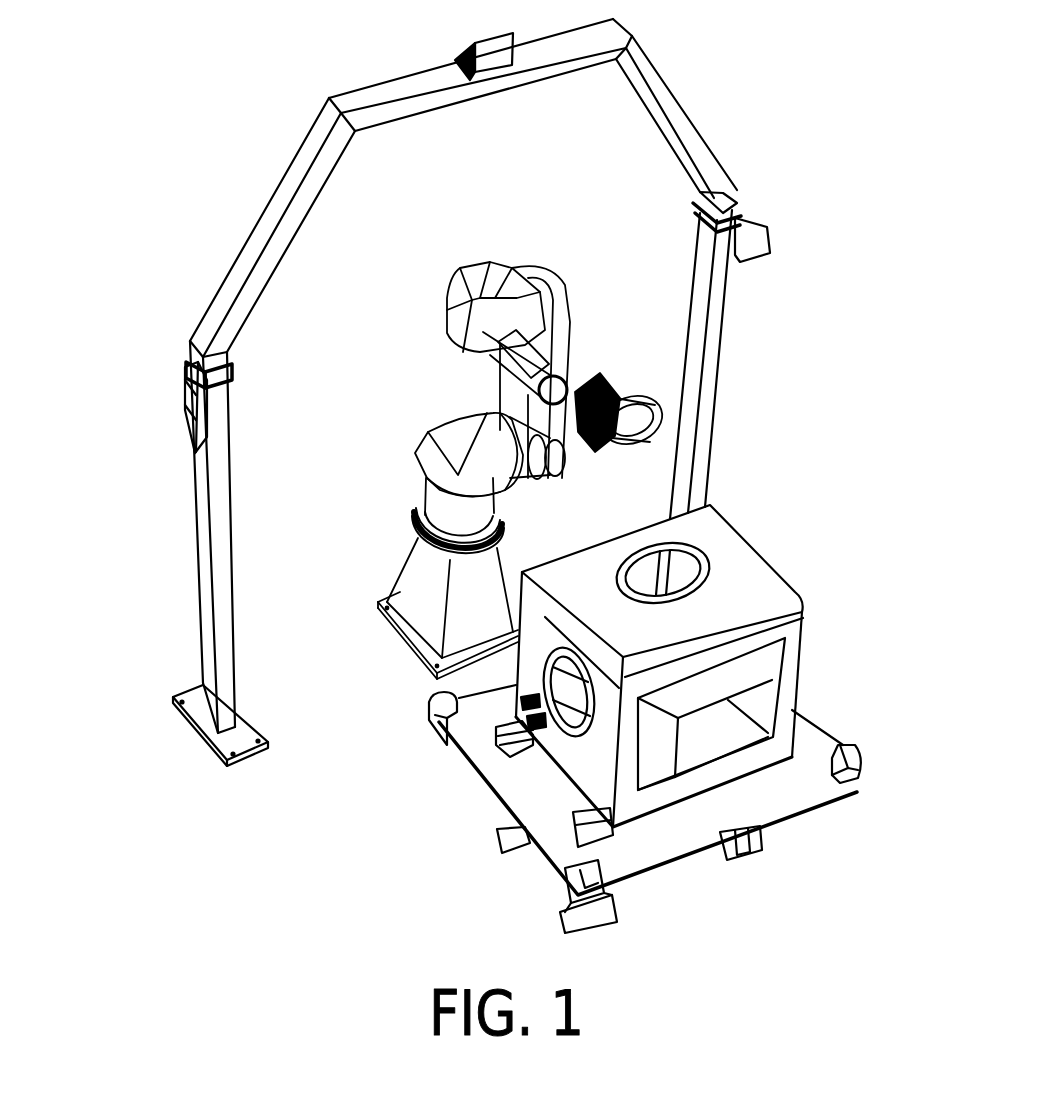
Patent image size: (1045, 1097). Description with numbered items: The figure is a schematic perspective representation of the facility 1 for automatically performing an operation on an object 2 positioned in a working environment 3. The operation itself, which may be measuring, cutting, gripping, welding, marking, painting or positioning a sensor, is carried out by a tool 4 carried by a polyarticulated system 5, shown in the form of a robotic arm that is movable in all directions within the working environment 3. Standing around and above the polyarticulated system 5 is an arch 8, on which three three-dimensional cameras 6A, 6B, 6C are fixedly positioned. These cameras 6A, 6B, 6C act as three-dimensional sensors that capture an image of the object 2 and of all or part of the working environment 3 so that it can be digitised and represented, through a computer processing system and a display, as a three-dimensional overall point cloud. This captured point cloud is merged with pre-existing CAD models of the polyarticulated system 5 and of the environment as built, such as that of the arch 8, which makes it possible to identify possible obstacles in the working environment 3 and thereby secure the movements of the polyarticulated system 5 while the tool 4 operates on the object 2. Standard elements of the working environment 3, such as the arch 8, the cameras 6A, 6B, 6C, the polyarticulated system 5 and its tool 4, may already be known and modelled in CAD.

The facility 1 is at (830, 262).
The object 2 is at (728, 545).
The working environment 3 is at (146, 262).
The tool 4 is at (617, 398).
The polyarticulated system 5 is at (450, 322).
The 3D camera 6A is at (462, 55).
The 3D camera 6B is at (186, 420).
The 3D camera 6C is at (760, 238).
The arch 8 is at (270, 198).